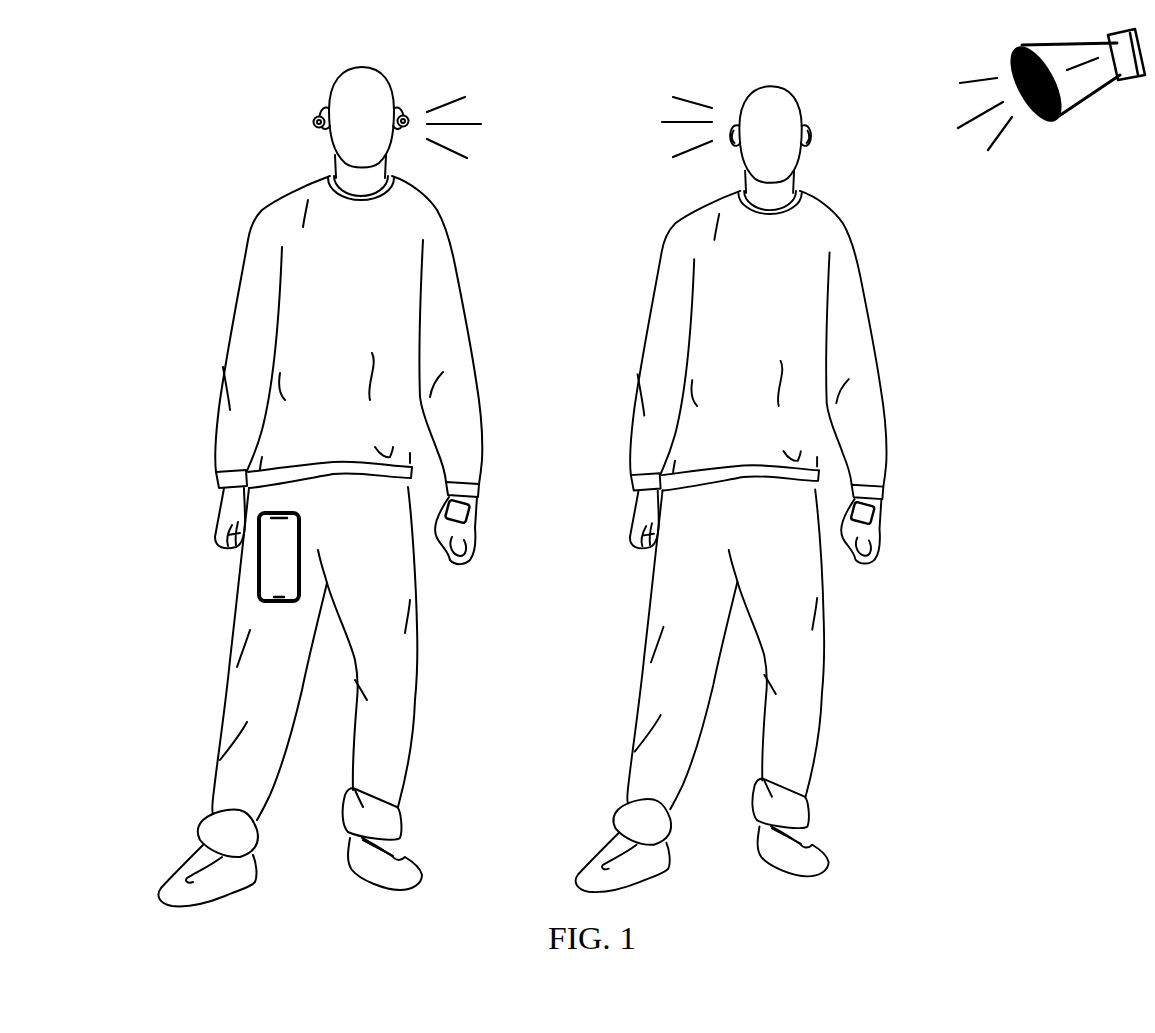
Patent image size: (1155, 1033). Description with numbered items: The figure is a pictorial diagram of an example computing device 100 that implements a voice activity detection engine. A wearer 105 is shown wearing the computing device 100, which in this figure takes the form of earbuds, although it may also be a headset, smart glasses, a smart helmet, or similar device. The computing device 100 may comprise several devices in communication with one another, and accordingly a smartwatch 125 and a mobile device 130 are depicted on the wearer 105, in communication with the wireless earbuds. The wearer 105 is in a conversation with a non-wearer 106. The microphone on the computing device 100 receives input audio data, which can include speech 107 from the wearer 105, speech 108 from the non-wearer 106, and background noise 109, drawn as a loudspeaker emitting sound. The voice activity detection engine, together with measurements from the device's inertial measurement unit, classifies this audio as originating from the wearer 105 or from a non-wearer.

The computing device 100 is at (316, 120).
The wearer 105 is at (436, 222).
The non-wearer 106 is at (843, 243).
The speech from the wearer 107 is at (495, 148).
The speech from the non-wearer 108 is at (650, 67).
The background noise 109 is at (942, 60).
The smartwatch 125 is at (472, 511).
The mobile device 130 is at (265, 563).